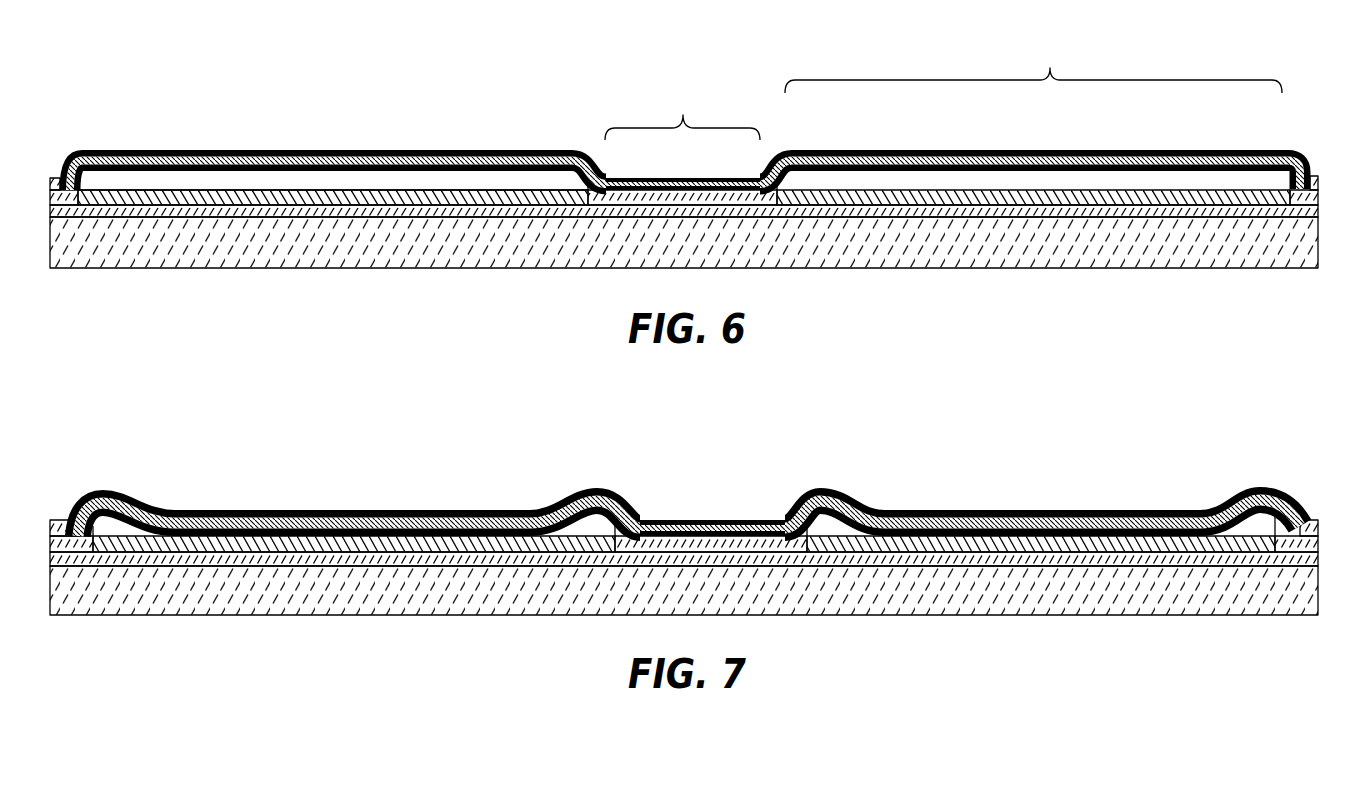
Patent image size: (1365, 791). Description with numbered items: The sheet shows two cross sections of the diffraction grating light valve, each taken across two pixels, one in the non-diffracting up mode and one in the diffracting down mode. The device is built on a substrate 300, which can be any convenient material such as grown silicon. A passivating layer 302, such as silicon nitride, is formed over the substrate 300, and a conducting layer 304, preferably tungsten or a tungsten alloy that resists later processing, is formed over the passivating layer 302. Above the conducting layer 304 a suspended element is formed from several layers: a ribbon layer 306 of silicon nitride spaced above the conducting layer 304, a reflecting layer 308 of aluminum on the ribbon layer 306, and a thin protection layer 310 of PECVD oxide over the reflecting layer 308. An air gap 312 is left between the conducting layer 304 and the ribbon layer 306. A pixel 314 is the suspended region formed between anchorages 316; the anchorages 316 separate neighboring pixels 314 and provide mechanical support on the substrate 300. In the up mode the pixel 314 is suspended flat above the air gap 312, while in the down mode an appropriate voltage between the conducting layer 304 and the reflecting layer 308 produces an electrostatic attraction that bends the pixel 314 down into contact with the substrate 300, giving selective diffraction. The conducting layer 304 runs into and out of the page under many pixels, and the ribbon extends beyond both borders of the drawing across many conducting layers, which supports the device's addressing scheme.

In FIG. 6, the substrate 300 is at (1097, 268).
In FIG. 7, the substrate 300 is at (1040, 617).
In FIG. 6, the passivating layer 302 is at (1320, 214).
In FIG. 7, the passivating layer 302 is at (1318, 553).
In FIG. 6, the conducting layer 304 is at (340, 190).
In FIG. 7, the conducting layer 304 is at (572, 536).
In FIG. 6, the ribbon layer 306 is at (1095, 175).
In FIG. 7, the ribbon layer 306 is at (815, 526).
In FIG. 6, the reflecting layer 308 is at (52, 186).
In FIG. 7, the reflecting layer 308 is at (50, 533).
In FIG. 6, the protection layer 310 is at (113, 152).
In FIG. 7, the protection layer 310 is at (212, 512).
In FIG. 6, the air gap 312 is at (190, 182).
In FIG. 6, the pixel 314 is at (1033, 64).
In FIG. 6, the anchorage 316 is at (682, 134).